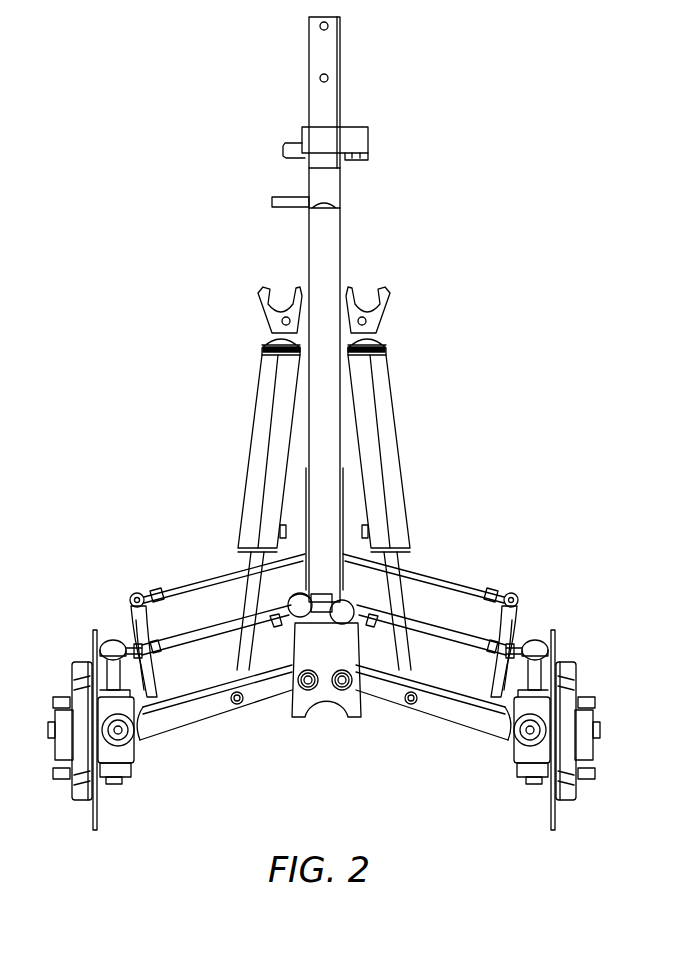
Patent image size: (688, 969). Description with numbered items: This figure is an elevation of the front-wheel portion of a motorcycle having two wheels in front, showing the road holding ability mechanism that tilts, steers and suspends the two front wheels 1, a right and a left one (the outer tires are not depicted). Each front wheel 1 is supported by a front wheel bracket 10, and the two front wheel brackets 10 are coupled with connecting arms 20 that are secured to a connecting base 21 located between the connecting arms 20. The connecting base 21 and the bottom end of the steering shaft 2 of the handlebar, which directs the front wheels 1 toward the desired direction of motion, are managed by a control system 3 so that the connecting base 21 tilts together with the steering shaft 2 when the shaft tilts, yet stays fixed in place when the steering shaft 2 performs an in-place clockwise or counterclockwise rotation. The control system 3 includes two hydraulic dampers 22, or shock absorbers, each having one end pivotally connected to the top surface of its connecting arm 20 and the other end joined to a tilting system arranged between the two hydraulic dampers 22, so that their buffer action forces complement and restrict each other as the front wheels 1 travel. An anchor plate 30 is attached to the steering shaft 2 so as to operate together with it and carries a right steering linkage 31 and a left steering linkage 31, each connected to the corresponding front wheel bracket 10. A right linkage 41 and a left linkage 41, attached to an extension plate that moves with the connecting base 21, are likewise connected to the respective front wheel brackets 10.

The front wheel 1 is at (93, 827).
The steering shaft 2 is at (325, 413).
The control system 3 is at (490, 497).
The front wheel bracket 10 is at (123, 777).
The connecting arm 20 is at (185, 723).
The connecting base 21 is at (304, 700).
The hydraulic damper 22 is at (257, 458).
The anchor plate 30 is at (330, 600).
The steering linkage 31 is at (180, 617).
The linkage 41 is at (217, 577).